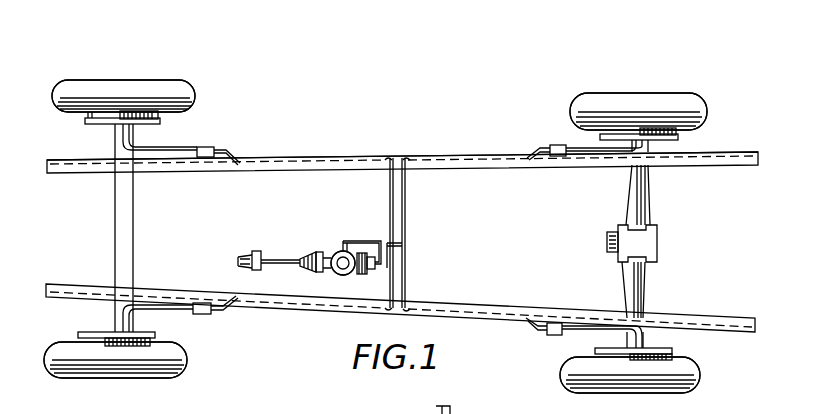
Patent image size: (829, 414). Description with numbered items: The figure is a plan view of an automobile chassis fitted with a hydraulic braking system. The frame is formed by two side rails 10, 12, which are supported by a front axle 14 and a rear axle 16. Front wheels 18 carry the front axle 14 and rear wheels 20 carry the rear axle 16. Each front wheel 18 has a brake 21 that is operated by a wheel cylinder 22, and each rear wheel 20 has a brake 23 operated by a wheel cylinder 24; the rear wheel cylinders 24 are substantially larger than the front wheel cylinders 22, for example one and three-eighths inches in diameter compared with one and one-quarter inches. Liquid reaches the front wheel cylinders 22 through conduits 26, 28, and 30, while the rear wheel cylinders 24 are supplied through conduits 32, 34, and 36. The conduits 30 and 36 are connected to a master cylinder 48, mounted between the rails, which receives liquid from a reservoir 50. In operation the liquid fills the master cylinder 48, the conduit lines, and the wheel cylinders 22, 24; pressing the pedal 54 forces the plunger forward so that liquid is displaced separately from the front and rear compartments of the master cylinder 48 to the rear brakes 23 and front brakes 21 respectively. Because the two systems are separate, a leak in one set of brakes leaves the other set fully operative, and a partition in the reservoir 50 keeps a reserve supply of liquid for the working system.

The side rail 10 is at (68, 286).
The side rail 12 is at (98, 168).
The front axle 14 is at (124, 228).
The rear axle 16 is at (632, 224).
The front wheel 18 is at (180, 98).
The rear wheel 20 is at (692, 112).
The brake 21 is at (162, 122).
The wheel cylinder 22 is at (128, 100).
The brake 23 is at (678, 139).
The wheel cylinder 24 is at (651, 112).
The conduit 26 is at (236, 153).
The conduit 28 is at (232, 312).
The conduit 30 is at (381, 240).
The conduit 32 is at (541, 150).
The conduit 34 is at (535, 328).
The conduit 36 is at (343, 250).
The master cylinder 48 is at (310, 255).
The reservoir 50 is at (336, 268).
The pedal 54 is at (257, 253).